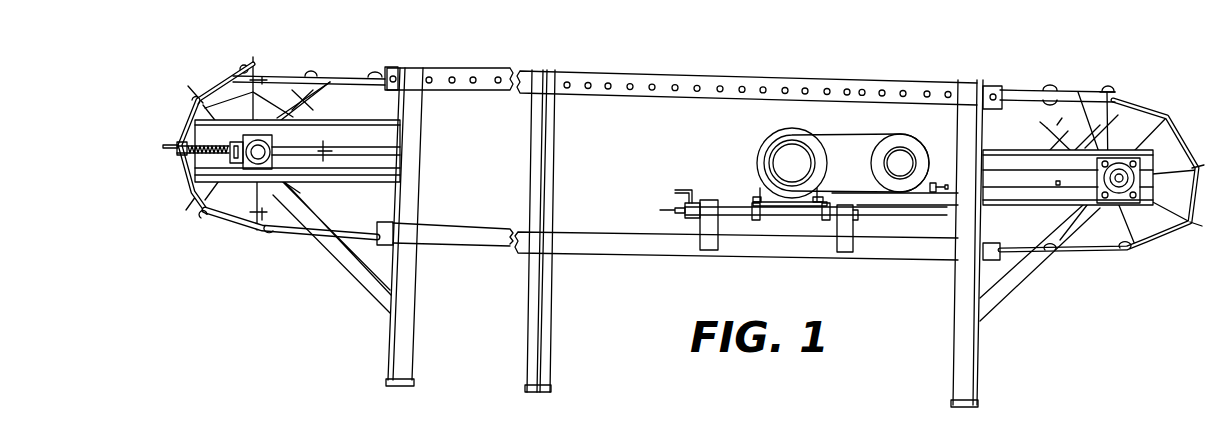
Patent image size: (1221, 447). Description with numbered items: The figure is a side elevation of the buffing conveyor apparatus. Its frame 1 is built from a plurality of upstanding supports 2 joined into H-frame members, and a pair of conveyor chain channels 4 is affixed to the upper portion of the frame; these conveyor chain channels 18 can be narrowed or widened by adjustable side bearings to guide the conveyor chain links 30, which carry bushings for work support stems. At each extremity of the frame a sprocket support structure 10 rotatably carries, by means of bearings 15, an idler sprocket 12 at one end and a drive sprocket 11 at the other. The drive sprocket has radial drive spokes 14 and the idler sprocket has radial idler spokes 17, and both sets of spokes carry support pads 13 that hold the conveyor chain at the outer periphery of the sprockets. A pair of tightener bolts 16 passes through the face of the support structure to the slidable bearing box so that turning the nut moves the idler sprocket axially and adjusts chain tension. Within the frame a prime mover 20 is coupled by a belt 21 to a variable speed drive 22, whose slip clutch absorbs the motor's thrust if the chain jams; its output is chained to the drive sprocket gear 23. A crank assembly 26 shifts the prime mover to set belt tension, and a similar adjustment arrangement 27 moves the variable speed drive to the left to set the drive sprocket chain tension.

The frame 1 is at (582, 248).
The upstanding supports 2 is at (413, 370).
The conveyor chain channels 4 is at (778, 77).
The sprocket support structures 10 is at (355, 212).
The drive sprocket 11 is at (1086, 140).
The idler sprocket 12 is at (276, 97).
The support pads 13 is at (317, 100).
The drive spokes 14 is at (1047, 130).
The bearings 15 is at (257, 157).
The tightener bolts 16 is at (173, 160).
The idler spokes 17 is at (255, 62).
The conveyor chain channels 18 is at (609, 82).
The prime mover 20 is at (767, 145).
The belt 21 is at (862, 126).
The variable speed drive 22 is at (937, 126).
The drive sprocket gear 23 is at (757, 202).
The crank assembly 26 is at (675, 212).
The adjustment arrangement 27 is at (930, 197).
The links 30 is at (337, 76).